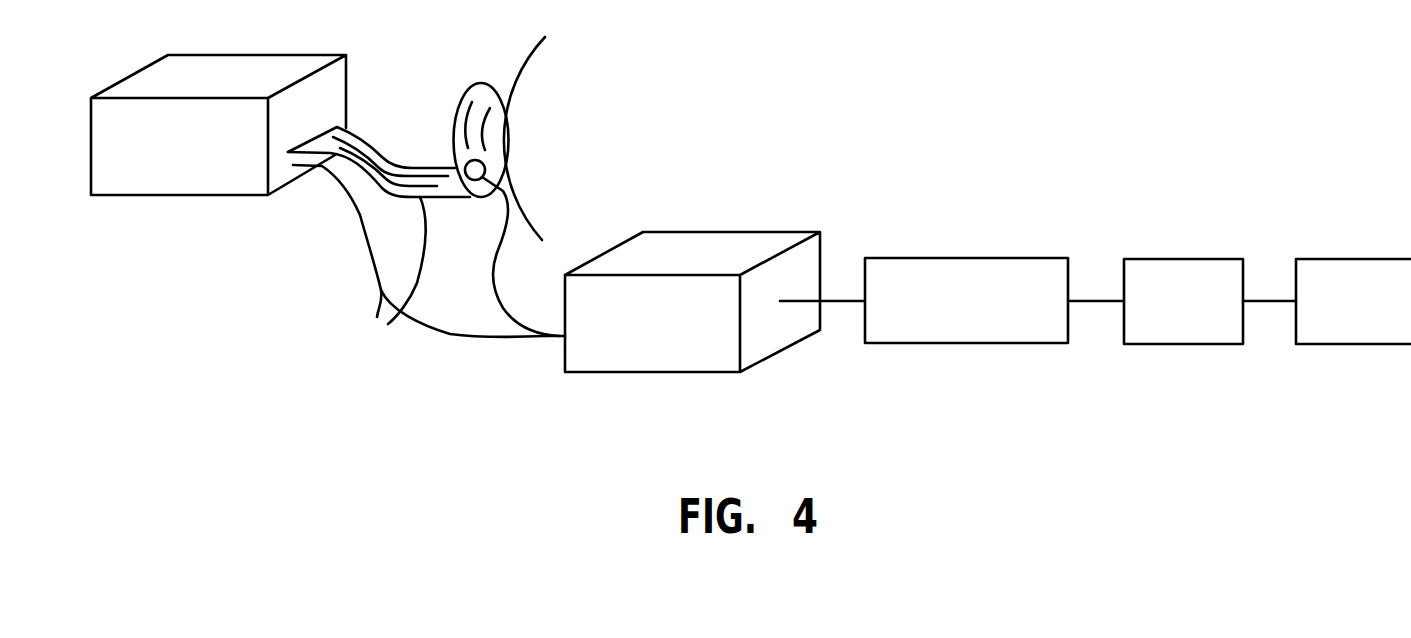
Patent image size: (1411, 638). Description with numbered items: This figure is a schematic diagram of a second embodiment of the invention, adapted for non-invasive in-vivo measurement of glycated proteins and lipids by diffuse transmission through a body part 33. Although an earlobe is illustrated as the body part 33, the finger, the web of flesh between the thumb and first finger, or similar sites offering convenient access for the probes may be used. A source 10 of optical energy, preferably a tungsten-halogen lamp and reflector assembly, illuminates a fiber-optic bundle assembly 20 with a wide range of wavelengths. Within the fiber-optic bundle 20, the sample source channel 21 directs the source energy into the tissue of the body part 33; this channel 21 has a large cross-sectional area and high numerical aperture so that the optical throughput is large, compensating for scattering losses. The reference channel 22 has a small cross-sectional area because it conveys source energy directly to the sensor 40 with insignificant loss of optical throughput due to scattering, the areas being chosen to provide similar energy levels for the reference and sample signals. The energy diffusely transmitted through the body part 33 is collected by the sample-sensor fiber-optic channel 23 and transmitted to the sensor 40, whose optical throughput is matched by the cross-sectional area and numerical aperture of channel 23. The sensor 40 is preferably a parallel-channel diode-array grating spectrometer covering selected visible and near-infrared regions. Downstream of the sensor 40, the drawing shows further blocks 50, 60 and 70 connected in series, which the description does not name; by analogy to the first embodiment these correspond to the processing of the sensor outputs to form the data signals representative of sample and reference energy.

The source 10 is at (196, 157).
The fiber-optic bundle assembly 20 is at (497, 299).
The sample source channel 21 is at (400, 167).
The reference channel 22 is at (355, 205).
The sample-sensor fiber-optic channel 23 is at (566, 336).
The body part 33 is at (466, 88).
The sensor 40 is at (671, 334).
The processing block 50 is at (979, 316).
The processing block 60 is at (1199, 316).
The output block 70 is at (1371, 316).